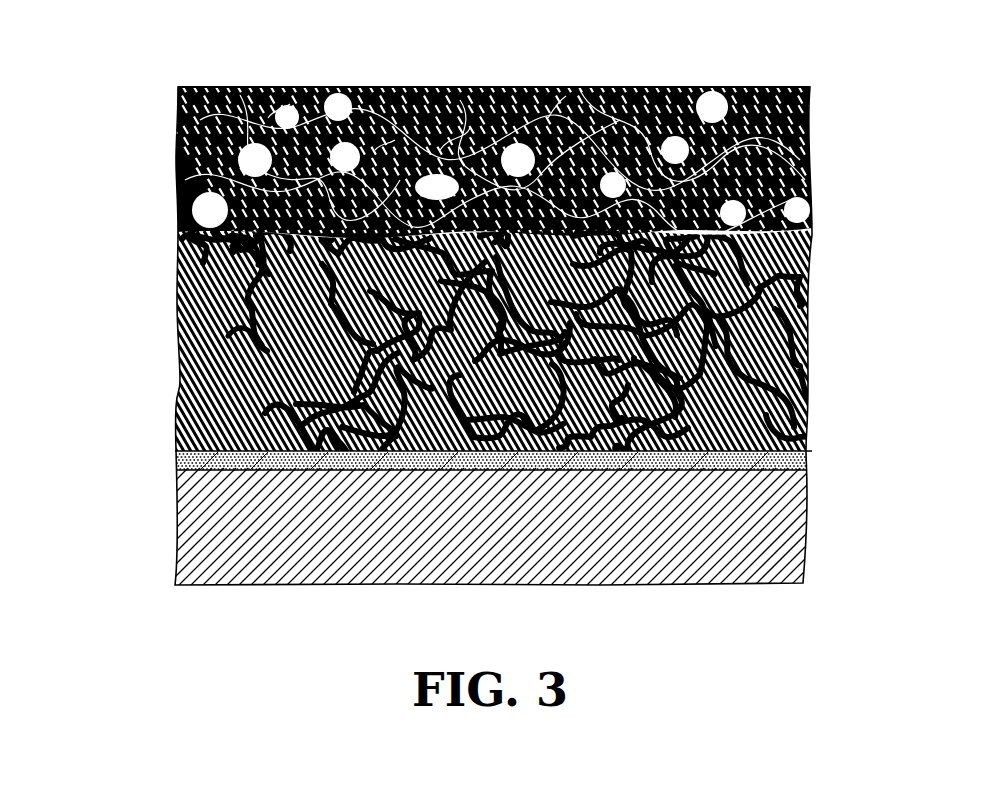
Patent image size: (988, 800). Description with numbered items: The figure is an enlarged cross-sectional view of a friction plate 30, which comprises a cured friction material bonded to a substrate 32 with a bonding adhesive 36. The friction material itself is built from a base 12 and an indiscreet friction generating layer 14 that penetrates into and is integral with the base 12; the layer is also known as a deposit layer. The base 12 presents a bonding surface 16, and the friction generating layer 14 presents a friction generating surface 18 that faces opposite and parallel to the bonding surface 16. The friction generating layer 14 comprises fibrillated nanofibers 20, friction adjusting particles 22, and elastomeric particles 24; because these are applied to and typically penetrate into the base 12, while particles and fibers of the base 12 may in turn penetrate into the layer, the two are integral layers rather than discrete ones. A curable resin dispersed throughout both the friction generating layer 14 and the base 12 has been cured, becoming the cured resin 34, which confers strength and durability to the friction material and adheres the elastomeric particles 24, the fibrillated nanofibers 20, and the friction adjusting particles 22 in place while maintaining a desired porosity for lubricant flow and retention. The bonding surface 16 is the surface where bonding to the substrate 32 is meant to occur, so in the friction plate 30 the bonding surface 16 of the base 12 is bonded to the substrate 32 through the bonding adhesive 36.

The friction plate 30 is at (97, 148).
The base 12 is at (817, 242).
The friction generating layer 14 is at (817, 87).
The bonding surface 16 is at (223, 454).
The friction generating surface 18 is at (684, 74).
The fibrillated nanofibers 20 is at (557, 110).
The friction adjusting particles 22 is at (382, 147).
The elastomeric particles 24 is at (792, 207).
The substrate 32 is at (766, 500).
The cured resin 34 is at (235, 330).
The bonding adhesive 36 is at (806, 466).